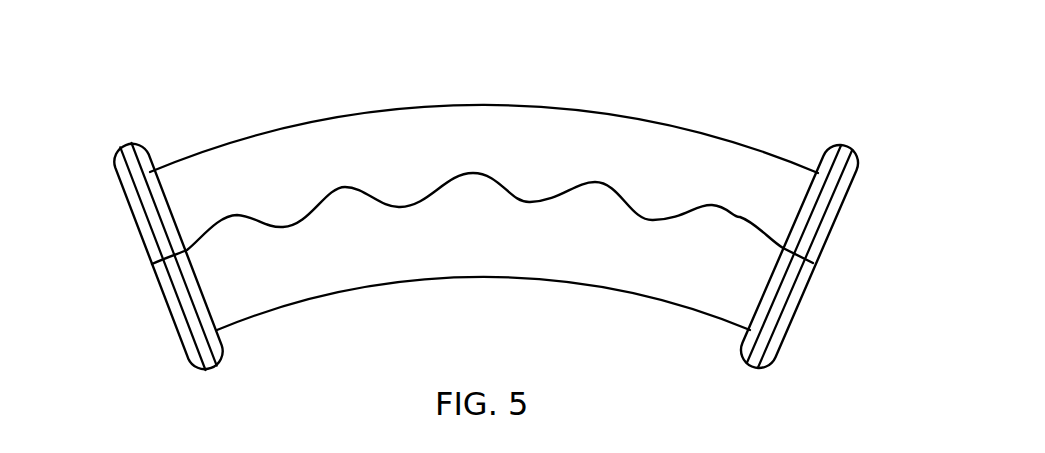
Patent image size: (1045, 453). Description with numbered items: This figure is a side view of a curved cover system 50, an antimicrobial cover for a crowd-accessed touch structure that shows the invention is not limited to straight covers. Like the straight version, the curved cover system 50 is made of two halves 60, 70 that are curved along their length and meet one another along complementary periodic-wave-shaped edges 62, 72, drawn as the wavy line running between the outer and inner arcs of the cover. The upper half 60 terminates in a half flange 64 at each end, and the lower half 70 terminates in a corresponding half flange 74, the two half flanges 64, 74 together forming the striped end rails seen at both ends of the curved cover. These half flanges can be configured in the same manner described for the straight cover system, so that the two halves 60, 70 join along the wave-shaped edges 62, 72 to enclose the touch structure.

The curved cover system 50 is at (289, 103).
The half 60 is at (600, 135).
The periodic-wave-shaped edge 62 is at (498, 180).
The half flange 64 is at (118, 173).
The half 70 is at (527, 263).
The periodic-wave-shaped edge 72 is at (433, 197).
The half flange 74 is at (188, 342).